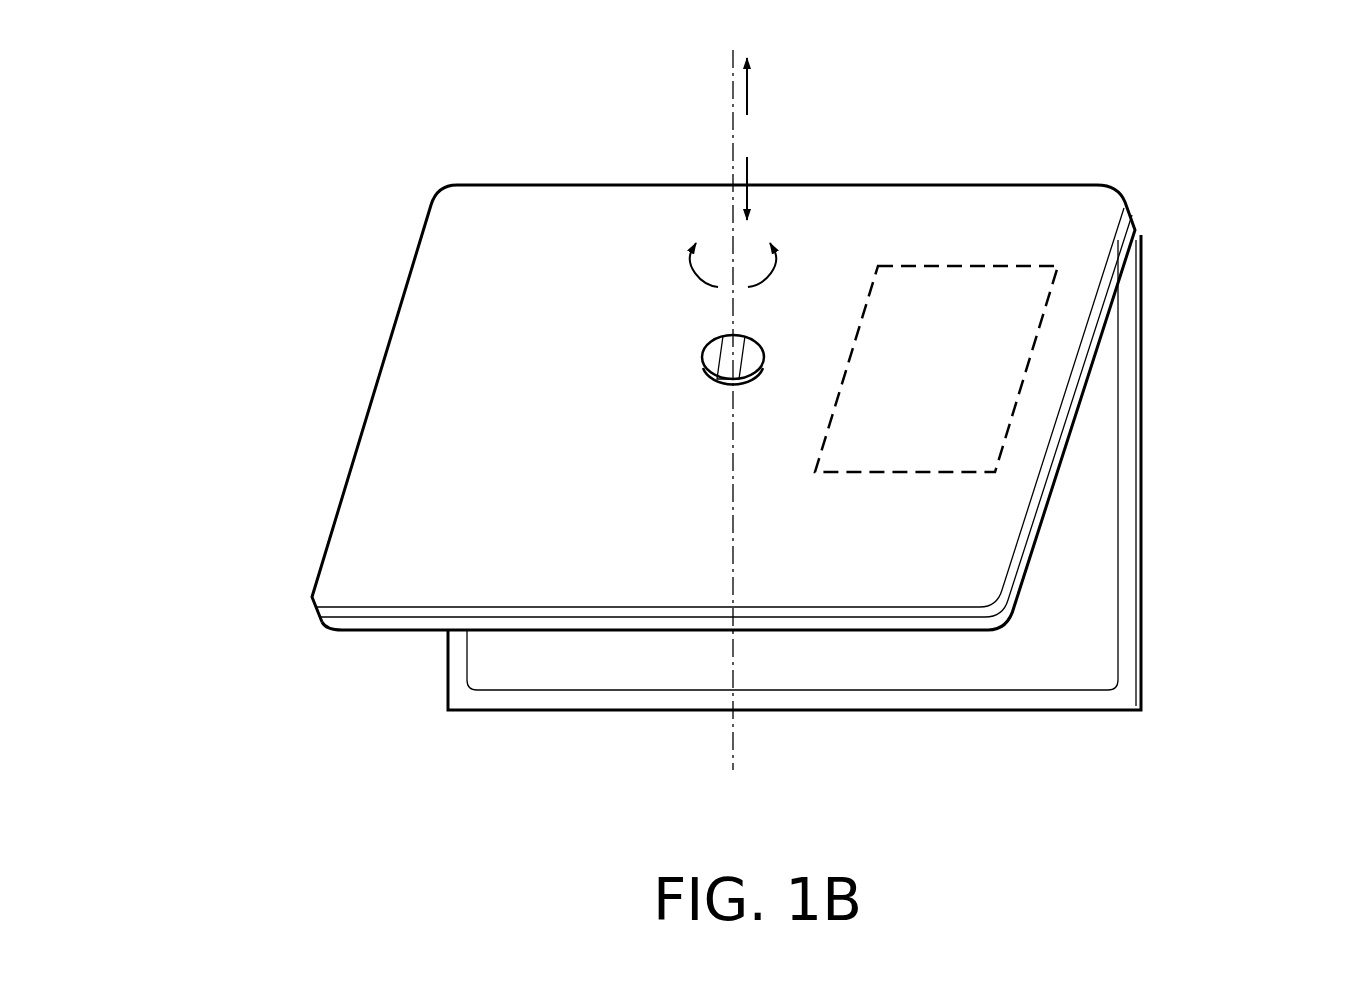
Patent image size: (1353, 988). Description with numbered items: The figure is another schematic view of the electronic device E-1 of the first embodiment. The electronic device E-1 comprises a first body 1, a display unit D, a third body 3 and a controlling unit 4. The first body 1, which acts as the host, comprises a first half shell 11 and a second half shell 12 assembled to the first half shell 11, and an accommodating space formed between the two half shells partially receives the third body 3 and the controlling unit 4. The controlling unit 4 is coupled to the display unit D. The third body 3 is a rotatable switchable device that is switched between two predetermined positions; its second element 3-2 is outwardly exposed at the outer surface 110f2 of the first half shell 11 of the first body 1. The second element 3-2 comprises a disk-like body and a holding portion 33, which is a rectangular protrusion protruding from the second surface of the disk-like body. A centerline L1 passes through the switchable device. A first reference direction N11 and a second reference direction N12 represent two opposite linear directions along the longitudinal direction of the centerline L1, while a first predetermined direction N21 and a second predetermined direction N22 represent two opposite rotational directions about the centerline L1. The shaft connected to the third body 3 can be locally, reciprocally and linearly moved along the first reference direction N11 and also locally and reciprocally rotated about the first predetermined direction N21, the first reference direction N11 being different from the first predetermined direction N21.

The electronic device E-1 is at (155, 162).
The first body 1 is at (363, 378).
The outer surface 110f2 is at (500, 212).
The first half shell 11 is at (342, 613).
The second half shell 12 is at (418, 624).
The third body 3 is at (768, 335).
The second element 3-2 is at (712, 350).
The holding portion 33 is at (717, 369).
The controlling unit 4 is at (1030, 366).
The display unit D is at (1073, 592).
The centerline L1 is at (731, 410).
The first reference direction N11 is at (782, 86).
The second reference direction N12 is at (782, 183).
The first predetermined direction N21 is at (795, 259).
The second predetermined direction N22 is at (670, 259).